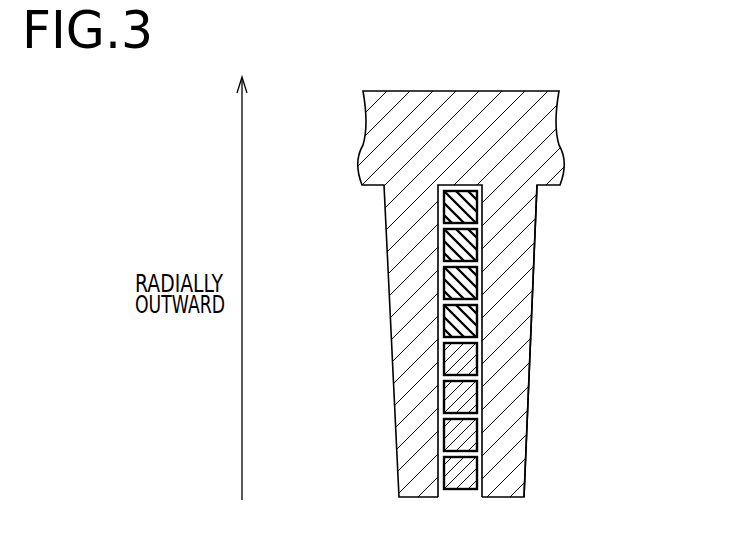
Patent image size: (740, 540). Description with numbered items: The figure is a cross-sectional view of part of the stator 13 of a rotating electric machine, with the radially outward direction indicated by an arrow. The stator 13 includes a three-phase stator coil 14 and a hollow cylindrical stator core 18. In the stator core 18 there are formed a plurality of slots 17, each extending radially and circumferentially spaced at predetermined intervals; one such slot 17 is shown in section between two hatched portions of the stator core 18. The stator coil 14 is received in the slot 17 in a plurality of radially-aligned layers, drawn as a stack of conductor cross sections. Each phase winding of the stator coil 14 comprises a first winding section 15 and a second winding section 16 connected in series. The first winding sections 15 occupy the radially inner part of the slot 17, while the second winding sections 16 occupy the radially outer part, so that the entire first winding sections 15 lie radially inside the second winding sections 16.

The stator 13 is at (602, 104).
The stator coil 14 is at (333, 257).
The first winding section 15 is at (444, 475).
The second winding section 16 is at (444, 315).
The slot 17 is at (482, 340).
The stator core 18 is at (534, 258).